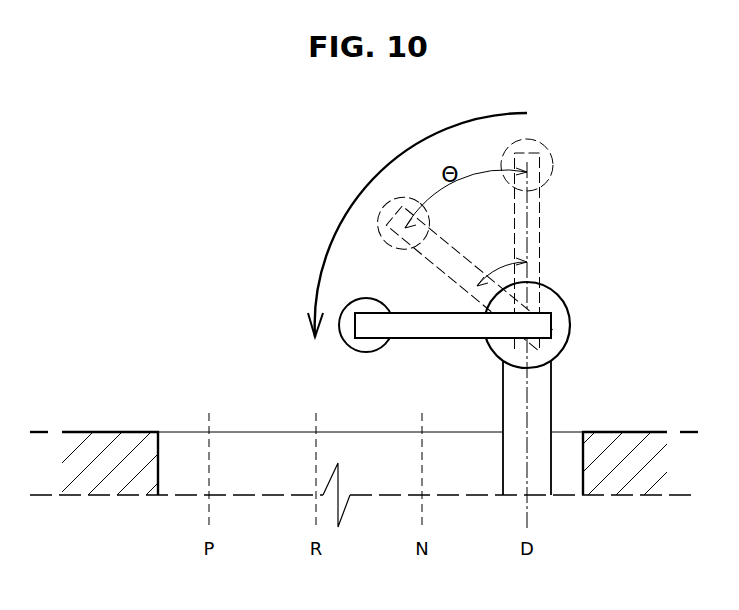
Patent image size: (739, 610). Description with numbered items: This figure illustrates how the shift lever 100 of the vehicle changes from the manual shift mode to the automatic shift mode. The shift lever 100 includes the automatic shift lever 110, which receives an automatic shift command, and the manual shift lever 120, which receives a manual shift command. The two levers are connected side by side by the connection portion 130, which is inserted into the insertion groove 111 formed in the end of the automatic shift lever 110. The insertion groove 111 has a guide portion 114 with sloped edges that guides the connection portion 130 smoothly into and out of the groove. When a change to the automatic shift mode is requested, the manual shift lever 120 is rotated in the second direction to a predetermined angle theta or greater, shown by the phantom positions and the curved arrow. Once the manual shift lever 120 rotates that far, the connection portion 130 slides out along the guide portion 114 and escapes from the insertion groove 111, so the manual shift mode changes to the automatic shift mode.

The shift lever 100 is at (586, 250).
The automatic shift lever 110 is at (562, 297).
The insertion groove 111 is at (531, 352).
The guide portion 114 is at (485, 340).
The manual shift lever 120 is at (366, 352).
The connection portion 130 is at (415, 339).